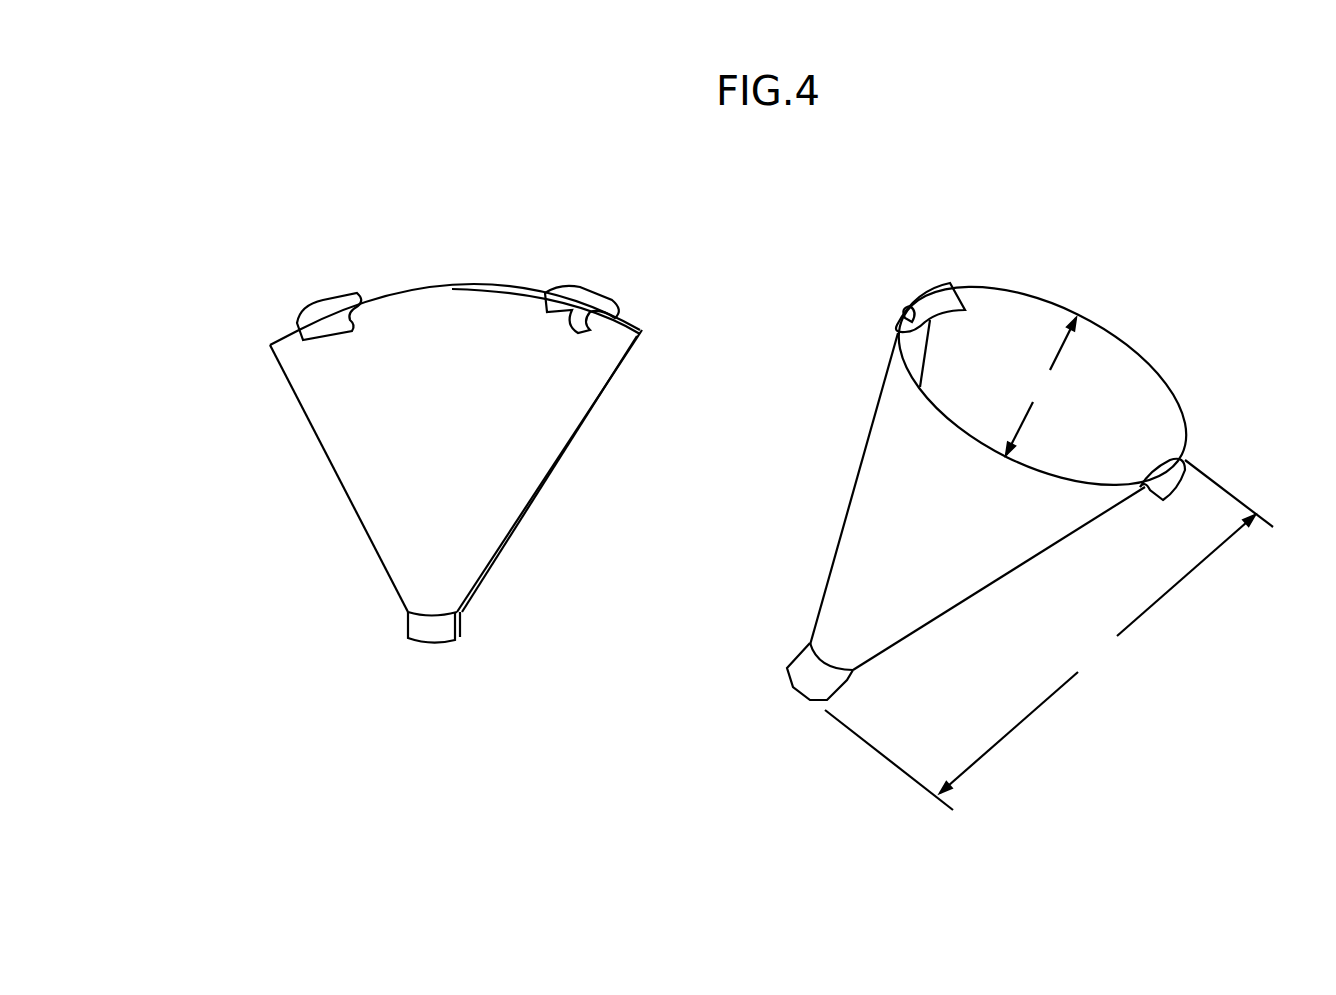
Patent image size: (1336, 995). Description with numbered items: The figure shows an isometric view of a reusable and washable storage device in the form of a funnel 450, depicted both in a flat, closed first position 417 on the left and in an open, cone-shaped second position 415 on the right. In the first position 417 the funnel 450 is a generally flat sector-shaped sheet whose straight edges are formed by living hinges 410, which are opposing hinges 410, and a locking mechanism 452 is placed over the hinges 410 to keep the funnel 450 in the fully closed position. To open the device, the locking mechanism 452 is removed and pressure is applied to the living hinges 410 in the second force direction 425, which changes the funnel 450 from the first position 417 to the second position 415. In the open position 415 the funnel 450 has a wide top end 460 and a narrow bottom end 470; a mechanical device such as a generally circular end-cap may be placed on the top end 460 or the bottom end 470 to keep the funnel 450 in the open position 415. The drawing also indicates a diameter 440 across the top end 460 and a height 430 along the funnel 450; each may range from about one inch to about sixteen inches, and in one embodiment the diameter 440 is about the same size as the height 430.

The living hinges 410 is at (270, 345).
The second position 415 is at (850, 430).
The first position 417 is at (581, 473).
The second force direction 425 is at (303, 426).
The height 430 is at (1049, 635).
The diameter 440 is at (1041, 386).
The funnel 450 is at (431, 262).
The locking mechanism 452 is at (330, 298).
The top end 460 is at (1152, 368).
The bottom end 470 is at (800, 700).